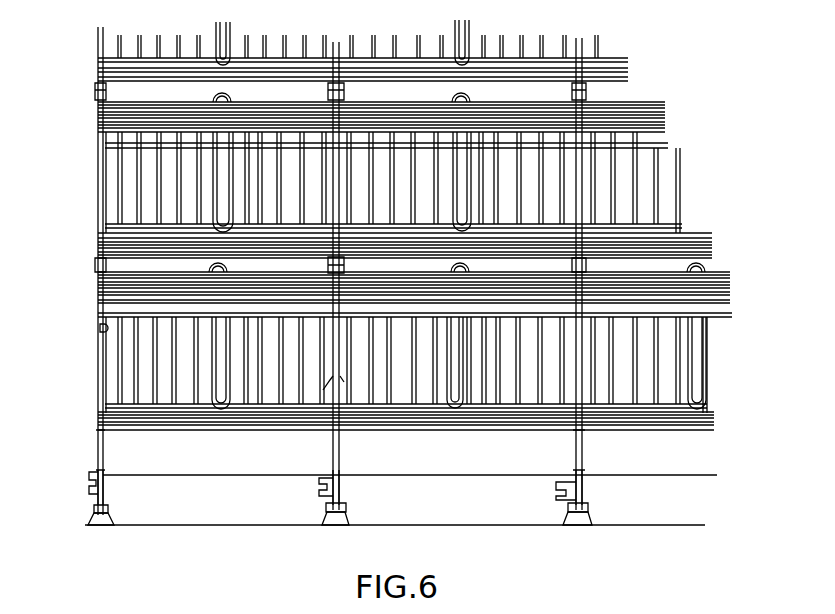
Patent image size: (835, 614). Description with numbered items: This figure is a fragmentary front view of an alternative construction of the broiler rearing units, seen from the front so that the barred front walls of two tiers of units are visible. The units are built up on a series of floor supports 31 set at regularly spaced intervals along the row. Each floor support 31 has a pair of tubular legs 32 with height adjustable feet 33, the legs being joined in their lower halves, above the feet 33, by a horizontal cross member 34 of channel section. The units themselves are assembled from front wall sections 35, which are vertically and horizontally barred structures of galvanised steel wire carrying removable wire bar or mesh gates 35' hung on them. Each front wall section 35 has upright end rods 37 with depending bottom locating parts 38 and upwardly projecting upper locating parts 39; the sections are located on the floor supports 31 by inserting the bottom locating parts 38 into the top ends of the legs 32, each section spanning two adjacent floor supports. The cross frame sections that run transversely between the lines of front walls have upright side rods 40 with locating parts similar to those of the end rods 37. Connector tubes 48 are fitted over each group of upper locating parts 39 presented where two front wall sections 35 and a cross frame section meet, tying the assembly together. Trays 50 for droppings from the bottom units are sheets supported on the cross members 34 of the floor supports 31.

The floor support 31 is at (93, 500).
The tubular leg 32 is at (340, 493).
The height adjustable foot 33 is at (96, 521).
The horizontal cross member 34 is at (92, 483).
The front wall section 35 is at (372, 302).
The gate 35' is at (372, 302).
The upright end rod 37 is at (100, 325).
The bottom locating part 38 is at (100, 447).
The upper locating part 39 is at (334, 262).
The upright side rod 40 is at (100, 405).
The connector tube 48 is at (100, 268).
The tray 50 is at (212, 474).